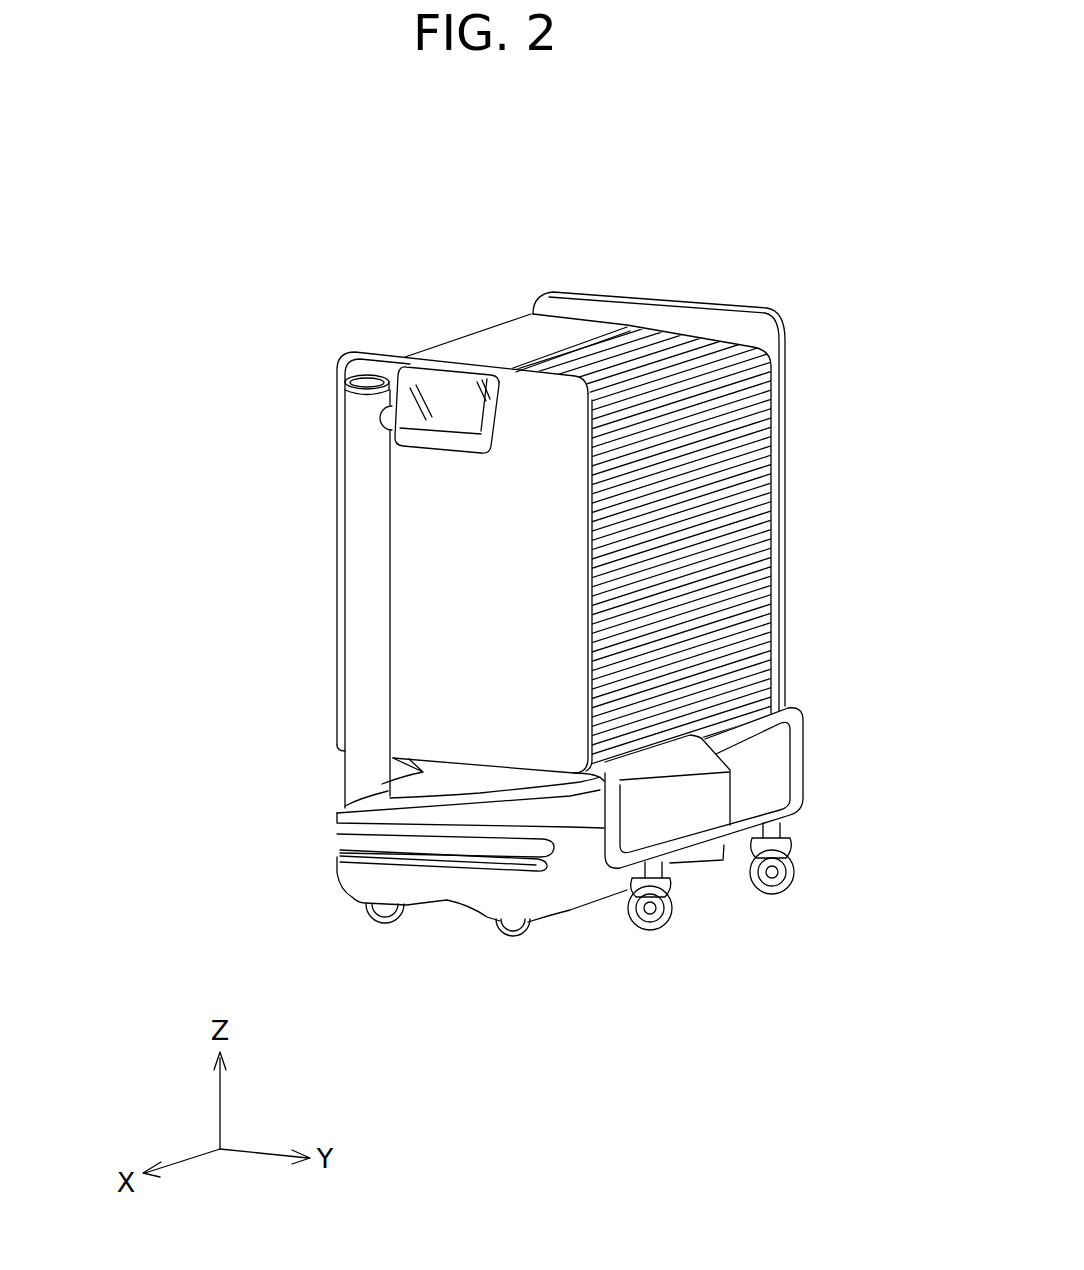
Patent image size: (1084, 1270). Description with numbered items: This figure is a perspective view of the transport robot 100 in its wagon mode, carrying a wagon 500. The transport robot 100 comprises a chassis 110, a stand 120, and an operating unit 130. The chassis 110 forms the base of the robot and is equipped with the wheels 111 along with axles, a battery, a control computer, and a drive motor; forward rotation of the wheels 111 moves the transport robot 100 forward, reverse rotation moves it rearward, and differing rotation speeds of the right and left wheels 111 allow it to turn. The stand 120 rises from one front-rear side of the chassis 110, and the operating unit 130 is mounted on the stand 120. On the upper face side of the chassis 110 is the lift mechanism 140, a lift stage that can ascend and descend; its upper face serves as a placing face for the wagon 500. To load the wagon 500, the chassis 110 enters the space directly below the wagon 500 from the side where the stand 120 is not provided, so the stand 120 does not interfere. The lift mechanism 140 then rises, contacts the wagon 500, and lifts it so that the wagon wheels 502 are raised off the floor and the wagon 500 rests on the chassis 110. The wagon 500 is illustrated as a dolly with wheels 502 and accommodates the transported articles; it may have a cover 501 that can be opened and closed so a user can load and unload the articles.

The transport robot 100 is at (347, 255).
The chassis 110 is at (348, 856).
The wheels 111 is at (390, 914).
The stand 120 is at (350, 596).
The operating unit 130 is at (437, 387).
The lift mechanism 140 is at (418, 770).
The wagon 500 is at (697, 322).
The cover 501 is at (770, 433).
The wheels 502 is at (654, 930).